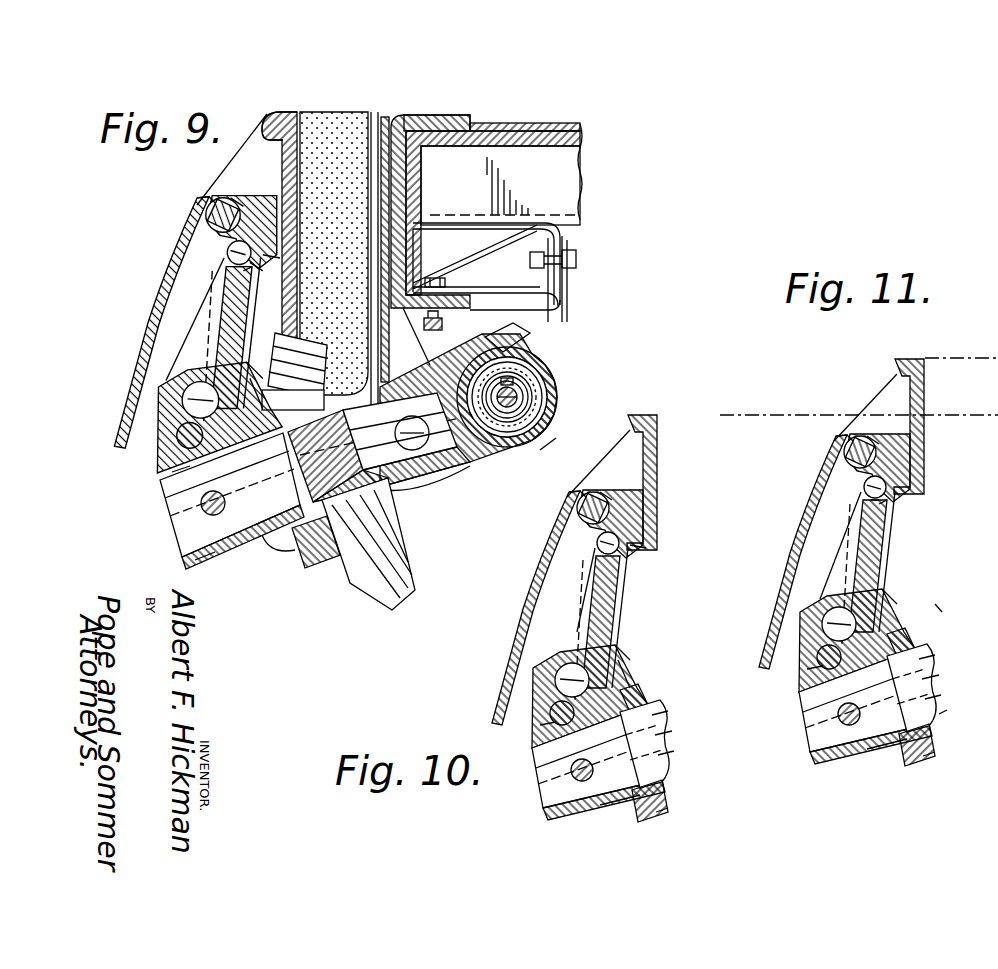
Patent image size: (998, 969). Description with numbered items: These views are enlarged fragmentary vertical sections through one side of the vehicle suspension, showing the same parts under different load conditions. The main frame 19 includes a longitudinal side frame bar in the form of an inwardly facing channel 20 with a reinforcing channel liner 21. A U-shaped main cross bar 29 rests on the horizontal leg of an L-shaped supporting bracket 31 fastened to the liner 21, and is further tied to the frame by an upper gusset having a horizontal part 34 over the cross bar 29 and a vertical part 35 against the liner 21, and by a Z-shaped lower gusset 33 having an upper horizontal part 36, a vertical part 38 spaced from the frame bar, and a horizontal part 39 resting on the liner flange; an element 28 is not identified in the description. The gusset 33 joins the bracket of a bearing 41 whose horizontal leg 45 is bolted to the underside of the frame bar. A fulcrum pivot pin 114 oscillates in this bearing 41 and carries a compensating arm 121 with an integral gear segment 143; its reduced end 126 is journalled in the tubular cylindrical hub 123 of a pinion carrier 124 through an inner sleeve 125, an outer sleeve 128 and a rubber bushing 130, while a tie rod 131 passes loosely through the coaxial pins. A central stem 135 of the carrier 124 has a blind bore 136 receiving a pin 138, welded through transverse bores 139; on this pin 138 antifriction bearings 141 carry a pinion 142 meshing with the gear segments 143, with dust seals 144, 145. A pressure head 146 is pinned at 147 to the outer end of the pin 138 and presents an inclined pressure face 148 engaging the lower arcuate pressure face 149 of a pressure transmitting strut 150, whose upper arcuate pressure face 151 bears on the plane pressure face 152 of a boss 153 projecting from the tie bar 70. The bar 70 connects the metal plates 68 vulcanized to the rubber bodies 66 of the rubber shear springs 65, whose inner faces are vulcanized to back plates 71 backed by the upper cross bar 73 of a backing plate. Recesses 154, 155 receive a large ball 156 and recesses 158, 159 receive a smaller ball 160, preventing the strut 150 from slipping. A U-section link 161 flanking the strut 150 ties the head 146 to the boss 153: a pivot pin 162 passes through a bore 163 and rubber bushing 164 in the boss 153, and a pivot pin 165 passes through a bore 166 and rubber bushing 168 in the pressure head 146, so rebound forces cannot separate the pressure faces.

In FIG. 9, the main frame 19 is at (428, 108).
In FIG. 9, the channel 20 is at (455, 115).
In FIG. 9, the reinforcing channel liner 21 is at (480, 124).
In FIG. 9, the side plate 28 is at (592, 155).
In FIG. 9, the main cross bar 29 is at (583, 133).
In FIG. 9, the L-shaped supporting bracket 31 is at (470, 228).
In FIG. 9, the lower gusset 33 is at (568, 243).
In FIG. 9, the upper horizontal part 34 is at (522, 131).
In FIG. 9, the vertical part 35 is at (412, 186).
In FIG. 9, the upper horizontal part 36 is at (562, 226).
In FIG. 9, the vertical part 38 is at (546, 262).
In FIG. 9, the horizontal part 39 is at (492, 289).
In FIG. 9, the bearing 41 is at (575, 317).
In FIG. 9, the horizontal leg 45 is at (445, 327).
In FIG. 9, the rubber shear spring 65 is at (256, 126).
In FIG. 9, the rubber body 66 is at (346, 114).
In FIG. 9, the rectangular metal plate 68 is at (290, 115).
In FIG. 9, the tie plate or bar 70 is at (283, 112).
In FIG. 10, the tie plate or bar 70 is at (658, 419).
In FIG. 11, the tie plate or bar 70 is at (919, 407).
In FIG. 9, the metal back plate 71 is at (372, 114).
In FIG. 9, the upper cross bar 73 is at (386, 117).
In FIG. 9, the fulcrum pivot pin 114 is at (552, 425).
In FIG. 9, the compensating or load transfer arm 121 is at (420, 370).
In FIG. 9, the tubular cylindrical hub 123 is at (532, 372).
In FIG. 9, the pinion carrier 124 is at (572, 414).
In FIG. 10, the pinion carrier 124 is at (612, 812).
In FIG. 11, the pinion carrier 124 is at (884, 792).
In FIG. 9, the inner metal sleeve 125 is at (529, 390).
In FIG. 9, the reduced end 126 is at (540, 396).
In FIG. 9, the outer metal sleeve 128 is at (538, 378).
In FIG. 9, the rubber bushing 130 is at (536, 384).
In FIG. 9, the tie rod 131 is at (520, 398).
In FIG. 9, the central stem 135 is at (478, 470).
In FIG. 9, the blind bore 136 is at (440, 482).
In FIG. 9, the pin 138 is at (380, 426).
In FIG. 10, the pin 138 is at (672, 728).
In FIG. 11, the pin 138 is at (941, 688).
In FIG. 9, the transverse bore 139 is at (436, 416).
In FIG. 9, the antifriction bearing 141 is at (400, 500).
In FIG. 10, the antifriction bearing 141 is at (655, 750).
In FIG. 11, the antifriction bearing 141 is at (955, 690).
In FIG. 9, the pinion 142 is at (325, 566).
In FIG. 10, the pinion 142 is at (666, 795).
In FIG. 11, the pinion 142 is at (930, 748).
In FIG. 9, the gear segment 143 is at (400, 560).
In FIG. 11, the gear segment 143 is at (966, 609).
In FIG. 9, the dust seal 144 is at (285, 555).
In FIG. 11, the dust seal 144 is at (968, 727).
In FIG. 9, the dust seal 145 is at (400, 520).
In FIG. 10, the dust seal 145 is at (660, 812).
In FIG. 11, the dust seal 145 is at (933, 783).
In FIG. 9, the pressure head 146 is at (172, 462).
In FIG. 10, the pressure head 146 is at (560, 820).
In FIG. 11, the pressure head 146 is at (868, 762).
In FIG. 9, the pin 147 is at (200, 558).
In FIG. 10, the pin 147 is at (578, 772).
In FIG. 11, the pin 147 is at (842, 700).
In FIG. 9, the angular pressure face 148 is at (178, 417).
In FIG. 10, the angular pressure face 148 is at (560, 670).
In FIG. 11, the angular pressure face 148 is at (895, 640).
In FIG. 9, the lower arcuate pressure face 149 is at (169, 376).
In FIG. 10, the lower arcuate pressure face 149 is at (625, 670).
In FIG. 9, the pressure transmitting strut 150 is at (186, 333).
In FIG. 10, the pressure transmitting strut 150 is at (607, 620).
In FIG. 11, the pressure transmitting strut 150 is at (899, 562).
In FIG. 9, the upper arcuate pressure face 151 is at (179, 256).
In FIG. 10, the upper arcuate pressure face 151 is at (628, 558).
In FIG. 9, the plane pressure face 152 is at (279, 273).
In FIG. 10, the plane pressure face 152 is at (646, 548).
In FIG. 9, the boss 153 is at (248, 208).
In FIG. 10, the boss 153 is at (652, 493).
In FIG. 11, the boss 153 is at (877, 430).
In FIG. 9, the recess 154 is at (149, 418).
In FIG. 10, the recess 154 is at (568, 688).
In FIG. 11, the recess 154 is at (896, 624).
In FIG. 9, the recess 155 is at (162, 339).
In FIG. 10, the recess 155 is at (578, 642).
In FIG. 11, the recess 155 is at (889, 568).
In FIG. 9, the large ball 156 is at (171, 399).
In FIG. 10, the large ball 156 is at (628, 652).
In FIG. 11, the large ball 156 is at (919, 602).
In FIG. 9, the recess 158 is at (175, 269).
In FIG. 11, the recess 158 is at (926, 508).
In FIG. 9, the recess 159 is at (188, 230).
In FIG. 11, the recess 159 is at (926, 477).
In FIG. 9, the smaller ball 160 is at (177, 282).
In FIG. 11, the smaller ball 160 is at (936, 491).
In FIG. 9, the link 161 is at (153, 323).
In FIG. 10, the link 161 is at (525, 602).
In FIG. 11, the link 161 is at (803, 548).
In FIG. 9, the pivot pin 162 is at (205, 187).
In FIG. 10, the pivot pin 162 is at (579, 509).
In FIG. 11, the pivot pin 162 is at (854, 426).
In FIG. 9, the bore 163 is at (232, 174).
In FIG. 10, the bore 163 is at (602, 514).
In FIG. 11, the bore 163 is at (926, 442).
In FIG. 9, the rubber bushing 164 is at (189, 184).
In FIG. 10, the rubber bushing 164 is at (575, 520).
In FIG. 11, the rubber bushing 164 is at (815, 452).
In FIG. 9, the pivot pin 165 is at (142, 446).
In FIG. 10, the pivot pin 165 is at (560, 714).
In FIG. 11, the pivot pin 165 is at (788, 648).
In FIG. 9, the bore 166 is at (180, 478).
In FIG. 10, the bore 166 is at (548, 728).
In FIG. 11, the bore 166 is at (779, 671).
In FIG. 9, the rubber bushing 168 is at (218, 502).
In FIG. 10, the rubber bushing 168 is at (636, 700).
In FIG. 11, the rubber bushing 168 is at (820, 667).